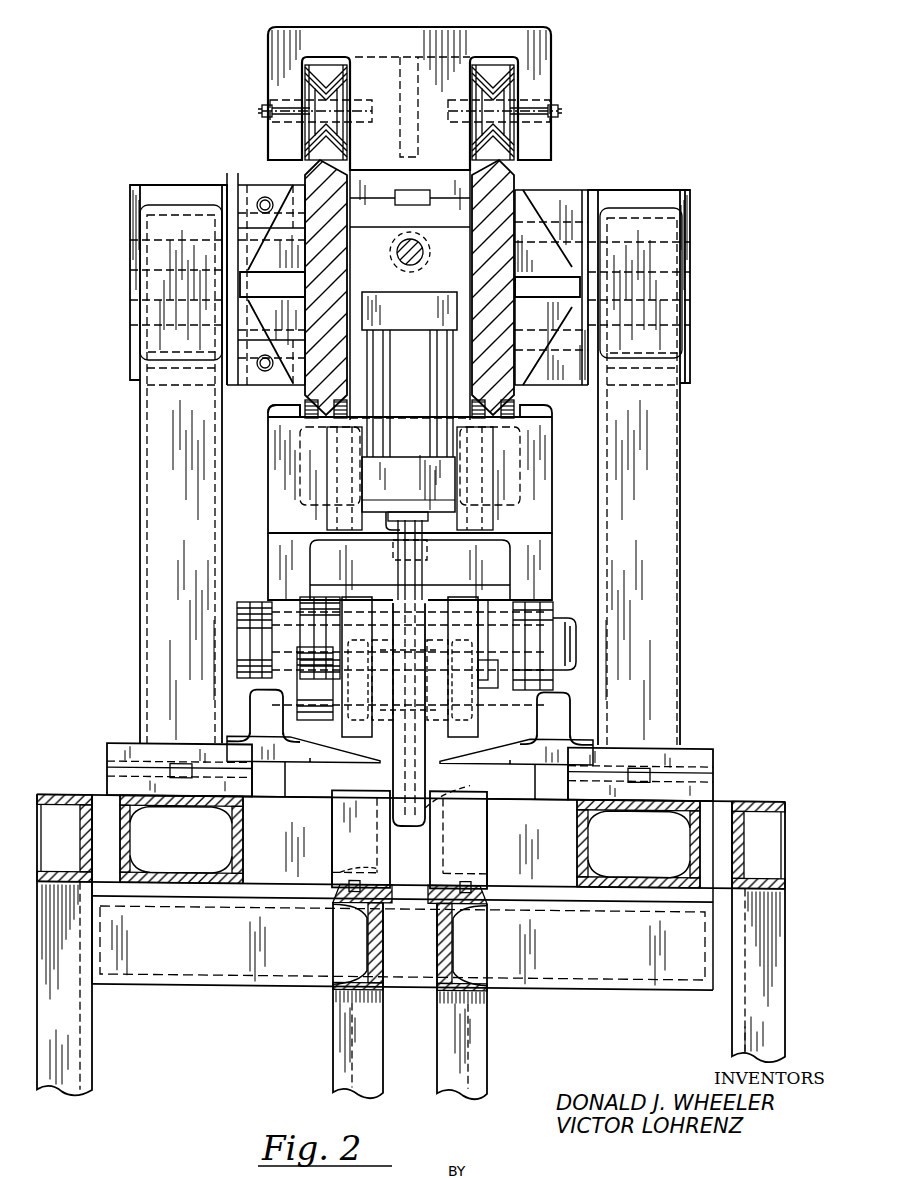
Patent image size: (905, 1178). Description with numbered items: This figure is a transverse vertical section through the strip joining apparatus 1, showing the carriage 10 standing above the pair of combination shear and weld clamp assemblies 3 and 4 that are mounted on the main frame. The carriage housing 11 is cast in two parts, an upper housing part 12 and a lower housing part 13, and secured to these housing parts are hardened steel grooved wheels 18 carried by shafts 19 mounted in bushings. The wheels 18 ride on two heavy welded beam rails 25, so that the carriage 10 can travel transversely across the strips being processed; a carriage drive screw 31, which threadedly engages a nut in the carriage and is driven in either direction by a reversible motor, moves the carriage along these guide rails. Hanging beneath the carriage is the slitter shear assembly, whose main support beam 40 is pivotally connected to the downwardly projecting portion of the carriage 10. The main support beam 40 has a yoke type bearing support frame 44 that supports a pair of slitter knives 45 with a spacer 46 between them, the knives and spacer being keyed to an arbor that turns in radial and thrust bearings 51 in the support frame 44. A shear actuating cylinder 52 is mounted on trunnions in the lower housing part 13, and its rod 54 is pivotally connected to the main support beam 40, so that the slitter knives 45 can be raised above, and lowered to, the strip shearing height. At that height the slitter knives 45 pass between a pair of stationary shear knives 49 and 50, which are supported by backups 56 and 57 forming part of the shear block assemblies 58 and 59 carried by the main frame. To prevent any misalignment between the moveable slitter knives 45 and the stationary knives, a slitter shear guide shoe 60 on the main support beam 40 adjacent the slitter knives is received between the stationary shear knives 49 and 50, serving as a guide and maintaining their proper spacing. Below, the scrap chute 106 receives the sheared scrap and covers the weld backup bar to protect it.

The strip joining apparatus 1 is at (130, 585).
The combination shear and weld clamp assembly 3 is at (570, 710).
The combination shear and weld clamp assembly 4 is at (246, 723).
The carriage 10 is at (560, 62).
The carriage housing 11 is at (542, 85).
The upper housing part 12 is at (288, 33).
The lower housing part 13 is at (272, 410).
The grooved wheels 18 is at (306, 75).
The shafts 19 is at (290, 122).
The beam rails 25 is at (508, 180).
The carriage drive screw 31 is at (418, 252).
The main support beam 40 is at (535, 560).
The bearing support frame 44 is at (270, 566).
The slitter knives 45 is at (398, 590).
The spacer 46 is at (422, 570).
The stationary shear knife 49 is at (472, 782).
The stationary shear knife 50 is at (380, 842).
The radial and thrust bearings 51 is at (478, 724).
The shear actuating cylinder 52 is at (409, 402).
The rod 54 is at (392, 526).
The backup 56 is at (452, 870).
The backup 57 is at (340, 865).
The shear block assembly 58 is at (494, 835).
The shear block assembly 59 is at (326, 824).
The slitter shear guide shoe 60 is at (396, 787).
The scrap chute 106 is at (400, 930).